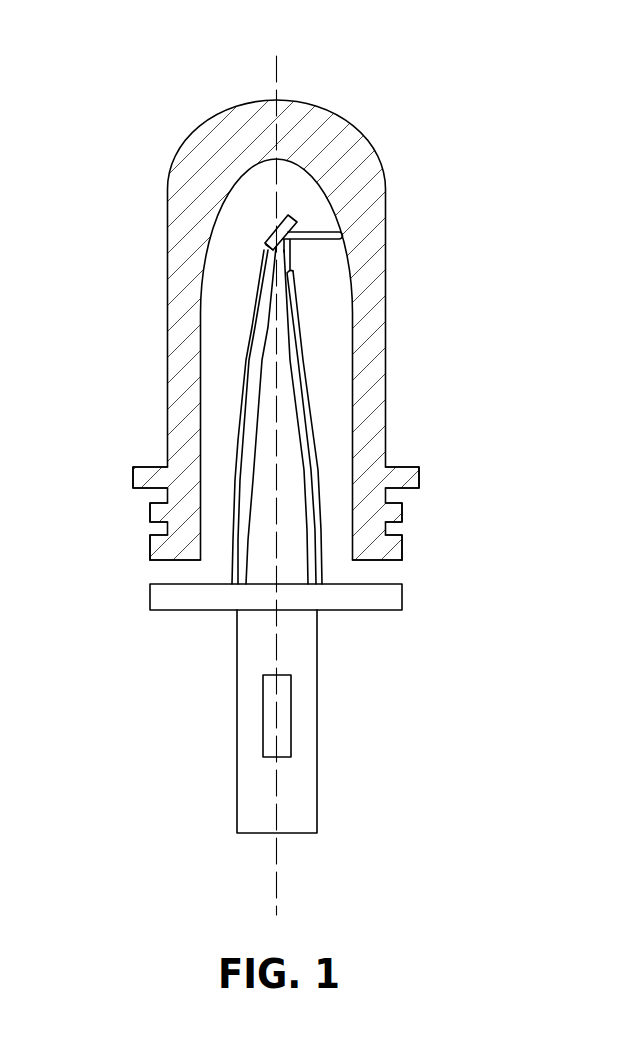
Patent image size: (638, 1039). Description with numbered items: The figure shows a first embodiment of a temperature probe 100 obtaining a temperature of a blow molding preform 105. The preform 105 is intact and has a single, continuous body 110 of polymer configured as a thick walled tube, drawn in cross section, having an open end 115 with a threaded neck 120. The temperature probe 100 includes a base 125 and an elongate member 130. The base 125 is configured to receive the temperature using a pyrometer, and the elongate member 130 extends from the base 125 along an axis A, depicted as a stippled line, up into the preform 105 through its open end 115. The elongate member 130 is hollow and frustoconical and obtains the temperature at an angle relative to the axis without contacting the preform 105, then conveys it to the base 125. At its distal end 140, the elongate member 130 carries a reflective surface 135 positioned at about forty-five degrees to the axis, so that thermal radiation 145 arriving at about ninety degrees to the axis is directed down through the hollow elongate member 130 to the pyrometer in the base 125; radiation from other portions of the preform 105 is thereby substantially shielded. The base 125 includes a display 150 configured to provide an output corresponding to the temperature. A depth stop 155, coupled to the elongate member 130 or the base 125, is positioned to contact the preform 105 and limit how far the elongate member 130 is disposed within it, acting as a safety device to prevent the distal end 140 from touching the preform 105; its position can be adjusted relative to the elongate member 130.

The temperature probe 100 is at (183, 705).
The blow molding preform 105 is at (155, 94).
The body 110 is at (168, 277).
The open end 115 is at (150, 560).
The threaded neck 120 is at (150, 510).
The base 125 is at (317, 737).
The elongate member 130 is at (249, 325).
The reflective surface 135 is at (296, 222).
The distal end 140 is at (266, 245).
The thermal radiation 145 is at (343, 239).
The display 150 is at (291, 690).
The depth stop 155 is at (403, 596).